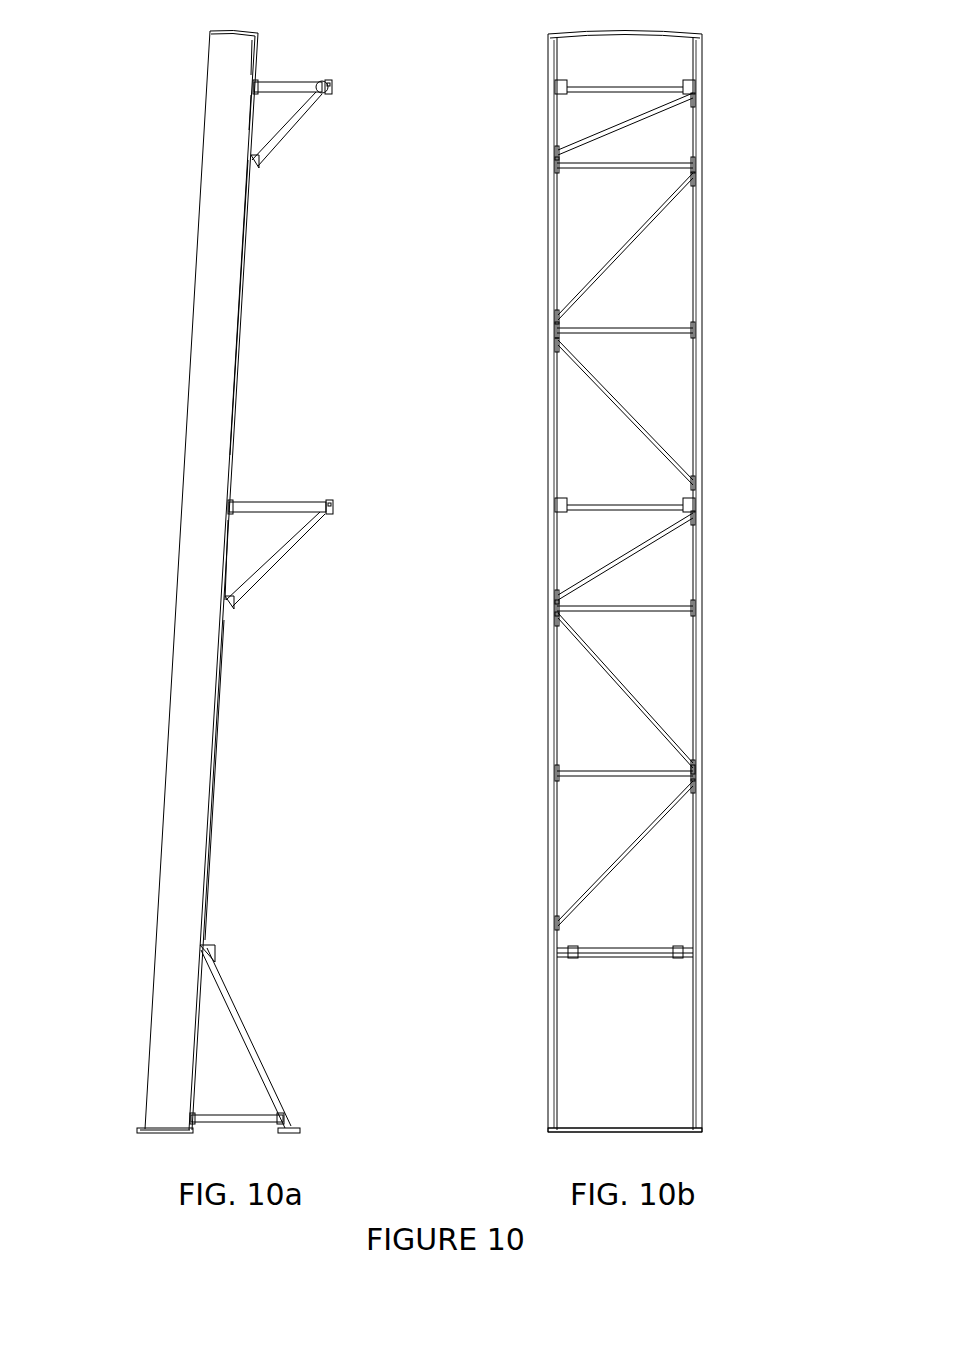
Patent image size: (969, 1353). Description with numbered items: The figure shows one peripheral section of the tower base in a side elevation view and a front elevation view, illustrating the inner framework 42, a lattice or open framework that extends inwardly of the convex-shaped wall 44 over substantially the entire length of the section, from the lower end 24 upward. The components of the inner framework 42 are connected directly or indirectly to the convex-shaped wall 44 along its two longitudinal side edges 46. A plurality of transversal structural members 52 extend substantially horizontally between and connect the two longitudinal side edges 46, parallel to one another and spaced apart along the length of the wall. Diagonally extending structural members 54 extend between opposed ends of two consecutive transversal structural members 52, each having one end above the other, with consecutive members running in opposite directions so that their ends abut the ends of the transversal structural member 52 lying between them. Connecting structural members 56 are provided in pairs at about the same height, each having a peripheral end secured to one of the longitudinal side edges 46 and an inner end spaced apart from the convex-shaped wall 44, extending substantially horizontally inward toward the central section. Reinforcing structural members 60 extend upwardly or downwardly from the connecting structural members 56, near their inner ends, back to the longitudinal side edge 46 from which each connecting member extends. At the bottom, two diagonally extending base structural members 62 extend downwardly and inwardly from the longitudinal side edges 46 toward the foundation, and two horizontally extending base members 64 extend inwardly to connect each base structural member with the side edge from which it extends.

In FIG. 10A, the lower end 24 is at (118, 1154).
In FIG. 10B, the lower end 24 is at (678, 1155).
In FIG. 10B, the inner framework 42 is at (735, 368).
In FIG. 10A, the convex-shaped wall 44 is at (175, 579).
In FIG. 10B, the convex-shaped wall 44 is at (625, 26).
In FIG. 10A, the longitudinal side edge 46 is at (253, 581).
In FIG. 10B, the longitudinal side edge 46 is at (638, 566).
In FIG. 10B, the transversal structural member 52 is at (684, 540).
In FIG. 10B, the diagonally extending structural member 54 is at (684, 506).
In FIG. 10A, the connecting structural member 56 is at (280, 263).
In FIG. 10B, the connecting structural member 56 is at (639, 277).
In FIG. 10A, the reinforcing structural member 60 is at (290, 357).
In FIG. 10A, the diagonally extending base structural member 62 is at (264, 1039).
In FIG. 10A, the horizontally extending base member 64 is at (277, 1152).